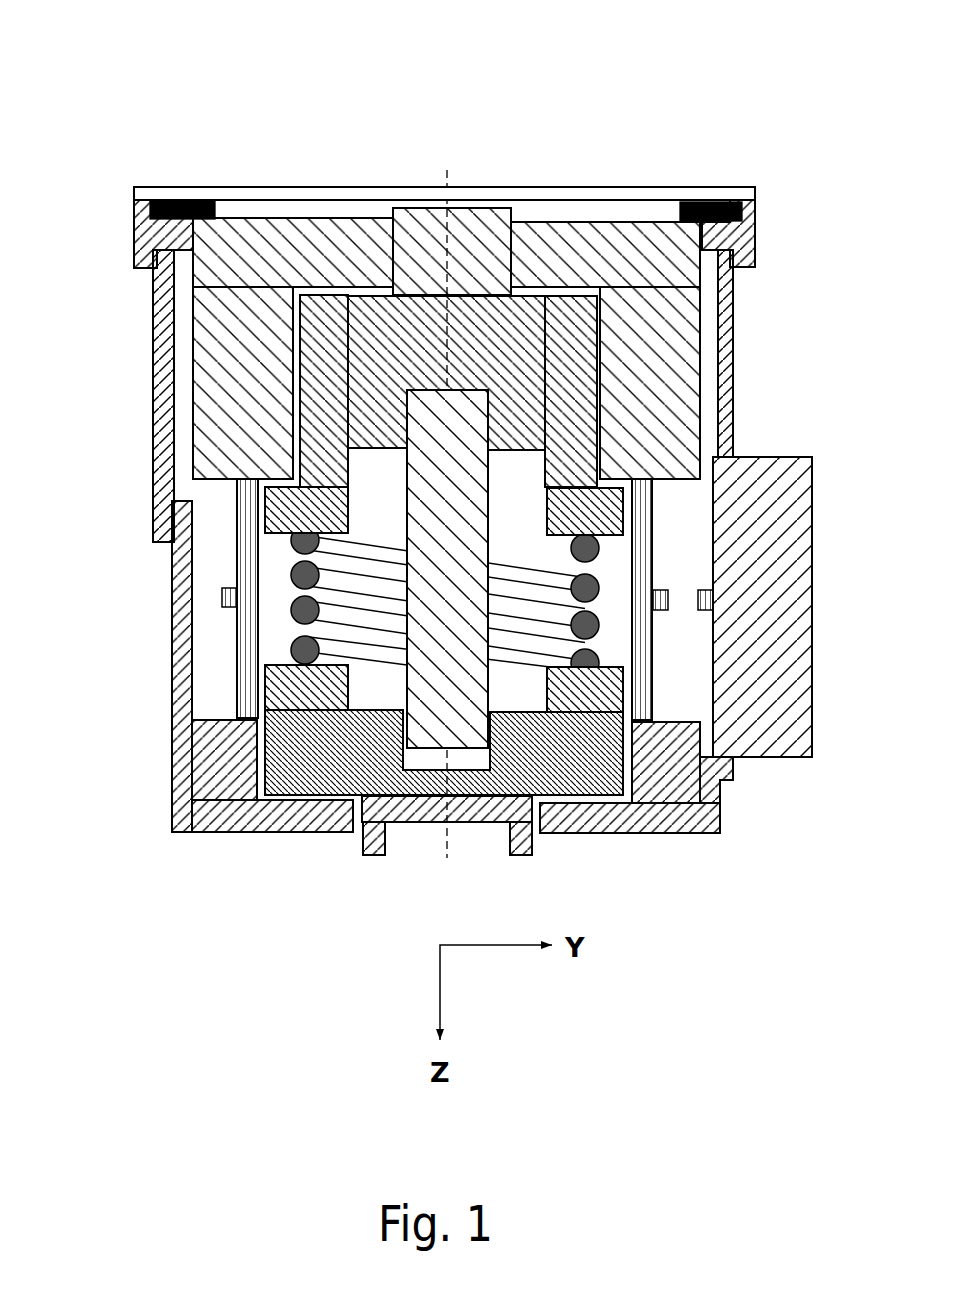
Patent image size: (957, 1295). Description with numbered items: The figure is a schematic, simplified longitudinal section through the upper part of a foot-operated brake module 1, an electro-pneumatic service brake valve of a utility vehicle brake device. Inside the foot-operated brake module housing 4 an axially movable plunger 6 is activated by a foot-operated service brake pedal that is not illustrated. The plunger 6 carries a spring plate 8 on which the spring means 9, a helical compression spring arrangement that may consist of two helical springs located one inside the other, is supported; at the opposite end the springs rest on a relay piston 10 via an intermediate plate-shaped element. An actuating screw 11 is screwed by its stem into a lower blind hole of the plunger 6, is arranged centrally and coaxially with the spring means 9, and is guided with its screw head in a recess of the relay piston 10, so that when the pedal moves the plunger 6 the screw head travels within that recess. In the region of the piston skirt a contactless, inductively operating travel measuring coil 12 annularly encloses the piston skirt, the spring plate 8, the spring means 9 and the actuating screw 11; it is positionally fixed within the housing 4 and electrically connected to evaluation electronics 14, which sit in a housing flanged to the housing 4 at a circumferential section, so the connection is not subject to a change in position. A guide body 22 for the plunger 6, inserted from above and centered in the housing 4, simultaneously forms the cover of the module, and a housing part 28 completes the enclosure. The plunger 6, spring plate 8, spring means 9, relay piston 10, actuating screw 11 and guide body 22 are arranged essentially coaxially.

The foot-operated brake module 1 is at (150, 114).
The housing 4 is at (180, 757).
The plunger 6 is at (390, 308).
The spring plate 8 is at (558, 308).
The spring means 9 is at (598, 549).
The relay piston 10 is at (567, 782).
The actuating screw 11 is at (422, 722).
The travel measuring coil 12 is at (248, 617).
The evaluation electronics 14 is at (760, 478).
The guide body 22 is at (218, 240).
The housing part 28 is at (162, 408).